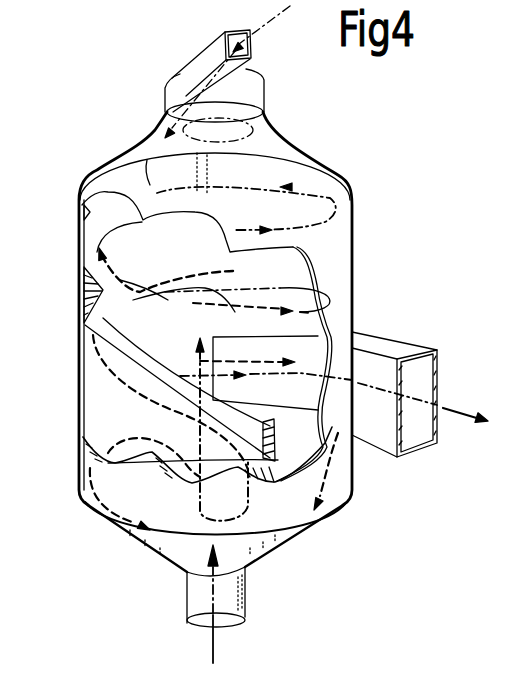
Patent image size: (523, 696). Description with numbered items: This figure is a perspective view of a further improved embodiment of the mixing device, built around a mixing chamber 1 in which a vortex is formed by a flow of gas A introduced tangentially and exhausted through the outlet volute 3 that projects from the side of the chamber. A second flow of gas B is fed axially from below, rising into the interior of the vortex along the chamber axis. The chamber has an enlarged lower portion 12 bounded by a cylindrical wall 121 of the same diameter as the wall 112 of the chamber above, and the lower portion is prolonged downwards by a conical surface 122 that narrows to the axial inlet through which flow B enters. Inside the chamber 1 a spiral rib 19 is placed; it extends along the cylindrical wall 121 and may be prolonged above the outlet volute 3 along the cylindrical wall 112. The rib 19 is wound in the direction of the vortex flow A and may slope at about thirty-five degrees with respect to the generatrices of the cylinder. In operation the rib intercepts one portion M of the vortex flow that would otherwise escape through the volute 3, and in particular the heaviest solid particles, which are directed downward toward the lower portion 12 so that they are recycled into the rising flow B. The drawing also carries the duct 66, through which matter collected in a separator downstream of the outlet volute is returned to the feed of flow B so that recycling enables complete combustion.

The mixing chamber 1 is at (356, 212).
The outlet volute 3 is at (365, 347).
The lower portion 12 is at (105, 420).
The spiral rib 19 is at (86, 322).
The wall of the chamber 112 is at (82, 258).
The cylindrical wall 121 is at (92, 462).
The portion of the vortex flow M is at (107, 378).
The flow of gas A is at (283, 186).
The second flow of gas B is at (226, 607).
The duct 66 is at (32, 0).
The conical surface 122 is at (3, 20).